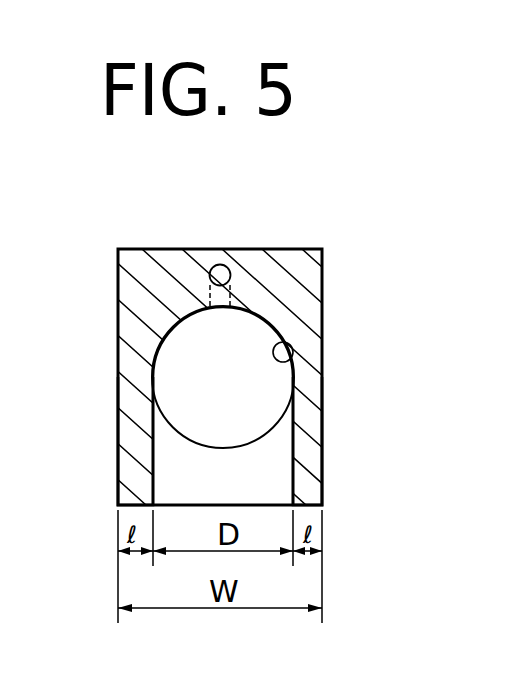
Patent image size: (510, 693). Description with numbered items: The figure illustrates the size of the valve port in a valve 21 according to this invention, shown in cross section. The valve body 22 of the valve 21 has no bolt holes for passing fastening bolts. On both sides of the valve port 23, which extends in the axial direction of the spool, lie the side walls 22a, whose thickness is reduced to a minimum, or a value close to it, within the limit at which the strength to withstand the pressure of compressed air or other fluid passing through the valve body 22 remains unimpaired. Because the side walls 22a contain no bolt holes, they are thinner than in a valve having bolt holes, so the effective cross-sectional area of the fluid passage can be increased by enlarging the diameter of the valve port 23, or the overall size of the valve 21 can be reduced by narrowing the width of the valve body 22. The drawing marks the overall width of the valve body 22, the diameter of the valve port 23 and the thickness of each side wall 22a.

The valve 21 is at (337, 223).
The valve body 22 is at (318, 297).
The side walls 22a is at (318, 438).
The valve port 23 is at (291, 359).